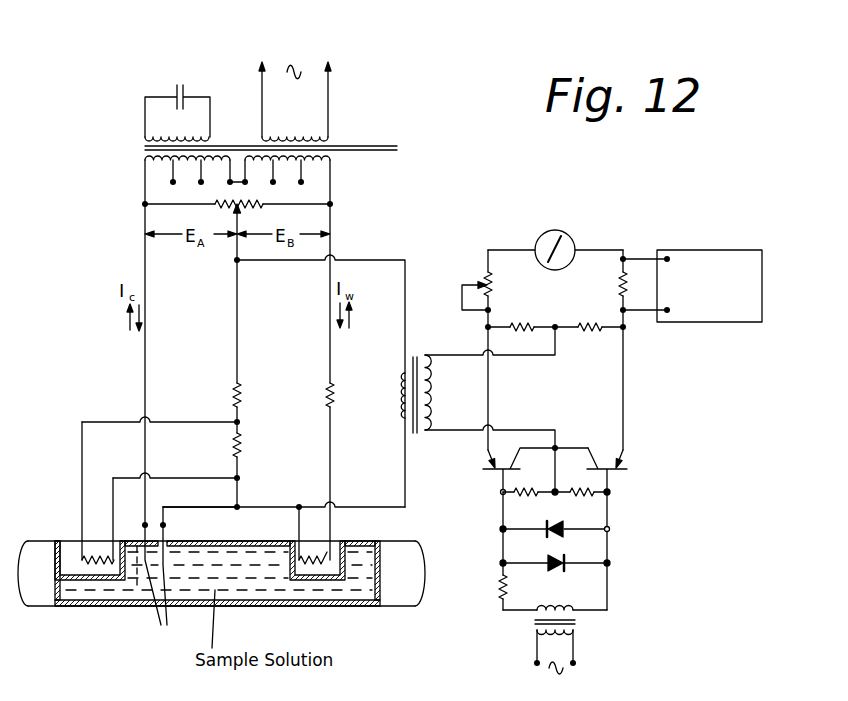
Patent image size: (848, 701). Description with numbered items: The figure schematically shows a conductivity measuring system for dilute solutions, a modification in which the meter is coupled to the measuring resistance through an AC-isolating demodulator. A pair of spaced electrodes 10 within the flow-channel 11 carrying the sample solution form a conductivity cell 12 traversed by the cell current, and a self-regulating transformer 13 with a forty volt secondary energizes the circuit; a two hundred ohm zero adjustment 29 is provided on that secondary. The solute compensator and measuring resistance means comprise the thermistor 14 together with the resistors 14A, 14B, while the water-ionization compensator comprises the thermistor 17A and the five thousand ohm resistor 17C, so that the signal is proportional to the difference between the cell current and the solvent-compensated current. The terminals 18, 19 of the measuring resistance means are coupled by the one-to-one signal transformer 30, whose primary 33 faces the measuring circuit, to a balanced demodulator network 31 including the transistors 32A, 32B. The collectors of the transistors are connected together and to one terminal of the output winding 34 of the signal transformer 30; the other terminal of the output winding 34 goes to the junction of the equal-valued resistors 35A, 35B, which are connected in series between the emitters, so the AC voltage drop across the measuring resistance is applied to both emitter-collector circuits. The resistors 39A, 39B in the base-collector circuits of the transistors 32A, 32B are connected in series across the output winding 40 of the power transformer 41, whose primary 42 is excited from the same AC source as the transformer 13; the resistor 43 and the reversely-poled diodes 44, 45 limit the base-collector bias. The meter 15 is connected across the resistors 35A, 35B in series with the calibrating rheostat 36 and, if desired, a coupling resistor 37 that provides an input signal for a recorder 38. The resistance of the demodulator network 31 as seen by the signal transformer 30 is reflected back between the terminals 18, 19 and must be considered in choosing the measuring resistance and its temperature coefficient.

The self-regulating transformer 13 is at (368, 146).
The zero adjustment 29 is at (250, 203).
The terminal 19 is at (235, 262).
The resistor 14B is at (233, 396).
The resistor 14A is at (241, 452).
The resistor 17C is at (327, 398).
The terminal 18 is at (240, 506).
The flow-channel 11 is at (62, 608).
The thermistor 14 is at (98, 566).
The conductivity cell 12 is at (137, 592).
The electrodes 10 is at (164, 586).
The thermistor 17A is at (318, 568).
The signal transformer 30 is at (437, 354).
The primary winding 33 is at (405, 400).
The output winding 34 is at (428, 389).
The balanced demodulator network 31 is at (665, 388).
The meter 15 is at (571, 239).
The calibrating rheostat 36 is at (484, 278).
The resistor 35A is at (520, 325).
The resistor 35B is at (589, 332).
The coupling resistor 37 is at (620, 287).
The recorder 38 is at (719, 250).
The transistor 32A is at (486, 474).
The transistor 32B is at (628, 474).
The resistor 39A is at (528, 497).
The resistor 39B is at (585, 497).
The diode 44 is at (566, 534).
The diode 45 is at (565, 566).
The resistor 43 is at (500, 585).
The output winding 40 is at (546, 611).
The power transformer 41 is at (618, 637).
The primary 42 is at (537, 633).